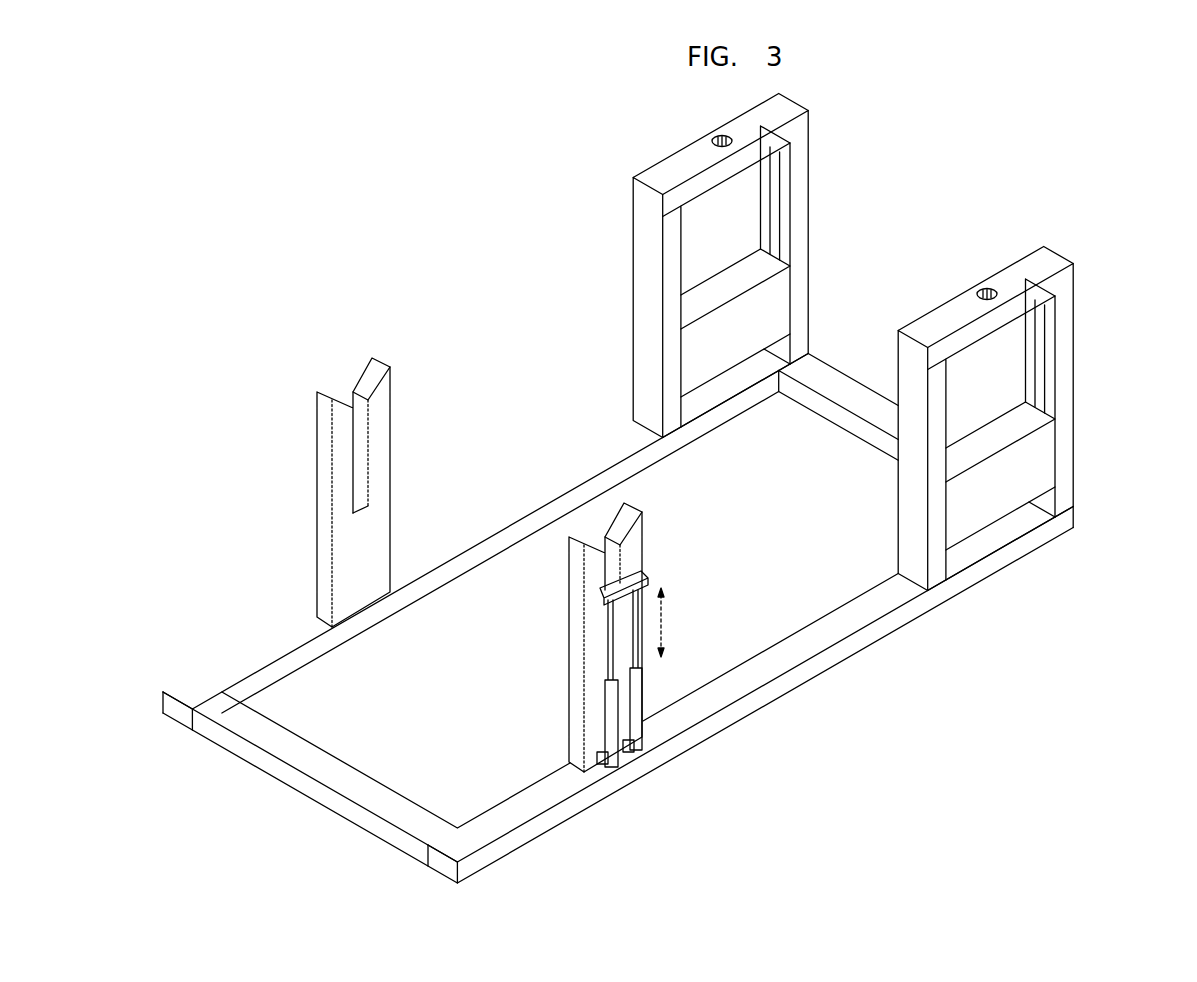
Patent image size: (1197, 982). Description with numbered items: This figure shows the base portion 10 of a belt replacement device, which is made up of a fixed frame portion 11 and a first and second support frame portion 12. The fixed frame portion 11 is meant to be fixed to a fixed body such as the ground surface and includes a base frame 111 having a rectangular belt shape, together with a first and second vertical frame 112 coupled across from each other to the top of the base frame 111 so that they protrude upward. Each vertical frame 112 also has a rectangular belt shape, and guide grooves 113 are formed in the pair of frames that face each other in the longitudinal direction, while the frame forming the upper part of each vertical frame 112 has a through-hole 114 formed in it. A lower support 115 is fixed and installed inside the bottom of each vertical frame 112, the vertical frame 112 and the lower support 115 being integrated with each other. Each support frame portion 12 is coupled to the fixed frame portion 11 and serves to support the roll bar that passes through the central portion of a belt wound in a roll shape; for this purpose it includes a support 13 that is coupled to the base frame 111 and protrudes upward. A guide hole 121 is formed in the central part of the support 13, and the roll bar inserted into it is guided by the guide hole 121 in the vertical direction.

The base portion 10 is at (1048, 119).
The fixed frame portion 11 is at (537, 236).
The base frame 111 is at (607, 446).
The vertical frame 112 is at (656, 273).
The guide groove 113 is at (774, 196).
The through-hole 114 is at (712, 139).
The lower support 115 is at (778, 313).
The support frame portion 12 is at (344, 360).
The guide hole 121 is at (393, 410).
The support 13 is at (343, 545).